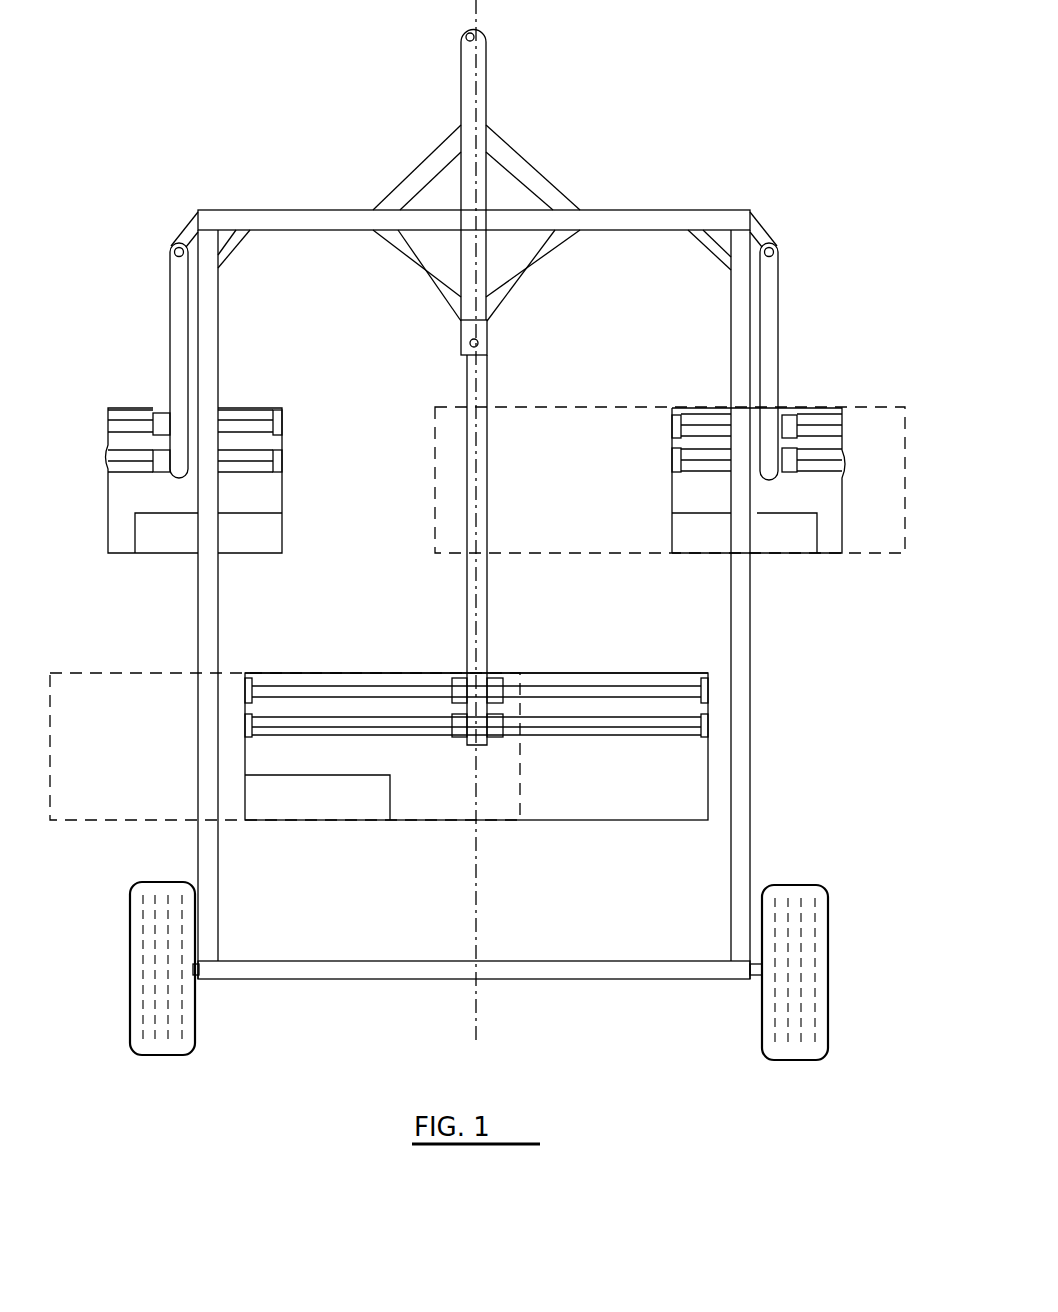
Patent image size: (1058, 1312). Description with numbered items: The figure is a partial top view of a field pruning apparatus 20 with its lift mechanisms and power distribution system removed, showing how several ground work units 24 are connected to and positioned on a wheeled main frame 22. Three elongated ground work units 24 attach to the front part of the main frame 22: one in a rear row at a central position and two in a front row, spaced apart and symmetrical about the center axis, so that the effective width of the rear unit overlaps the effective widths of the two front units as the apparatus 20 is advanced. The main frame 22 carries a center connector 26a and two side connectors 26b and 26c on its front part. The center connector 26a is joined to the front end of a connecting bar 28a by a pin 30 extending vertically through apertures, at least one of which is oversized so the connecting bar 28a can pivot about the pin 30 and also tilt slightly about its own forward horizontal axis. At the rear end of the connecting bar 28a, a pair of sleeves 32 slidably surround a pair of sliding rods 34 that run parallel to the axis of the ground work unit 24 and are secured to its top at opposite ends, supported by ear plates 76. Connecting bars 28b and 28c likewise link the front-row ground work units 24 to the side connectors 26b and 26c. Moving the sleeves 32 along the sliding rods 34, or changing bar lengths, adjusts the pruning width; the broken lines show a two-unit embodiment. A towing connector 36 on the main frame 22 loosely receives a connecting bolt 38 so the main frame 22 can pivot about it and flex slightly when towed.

The field pruning apparatus 20 is at (785, 92).
The main frame 22 is at (655, 203).
The ground work unit 24 is at (268, 404).
The center connector 26a is at (487, 322).
The side connector 26b is at (757, 220).
The side connector 26c is at (190, 222).
The connecting bar 28a is at (487, 458).
The connecting bar 28b is at (778, 305).
The connecting bar 28c is at (170, 303).
The pin 30 is at (487, 348).
The sleeve 32 is at (153, 410).
The sliding rod 34 is at (245, 408).
The towing connector 36 is at (486, 72).
The connecting bolt 38 is at (478, 37).
The ear plate 76 is at (245, 688).